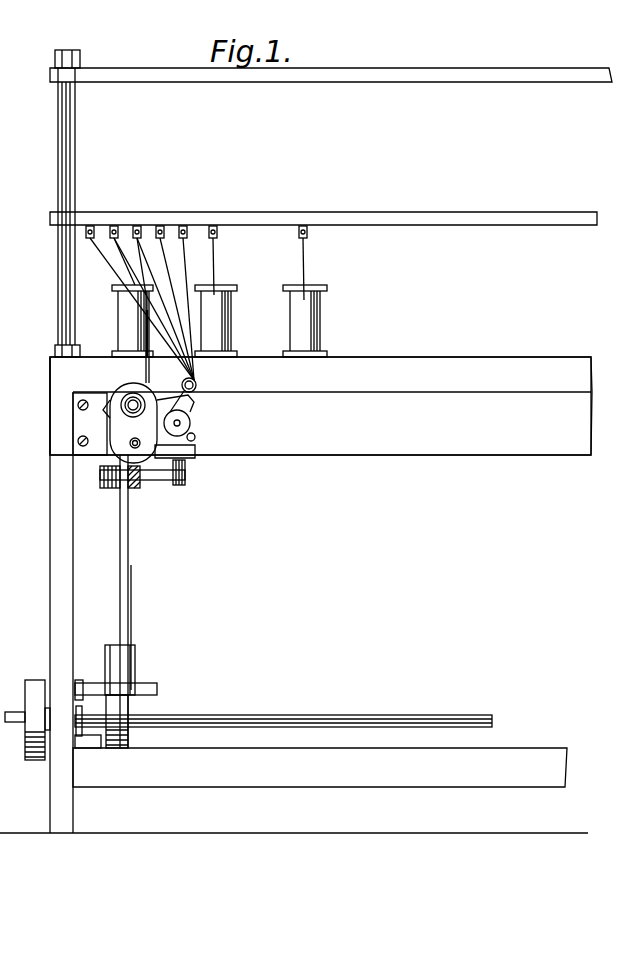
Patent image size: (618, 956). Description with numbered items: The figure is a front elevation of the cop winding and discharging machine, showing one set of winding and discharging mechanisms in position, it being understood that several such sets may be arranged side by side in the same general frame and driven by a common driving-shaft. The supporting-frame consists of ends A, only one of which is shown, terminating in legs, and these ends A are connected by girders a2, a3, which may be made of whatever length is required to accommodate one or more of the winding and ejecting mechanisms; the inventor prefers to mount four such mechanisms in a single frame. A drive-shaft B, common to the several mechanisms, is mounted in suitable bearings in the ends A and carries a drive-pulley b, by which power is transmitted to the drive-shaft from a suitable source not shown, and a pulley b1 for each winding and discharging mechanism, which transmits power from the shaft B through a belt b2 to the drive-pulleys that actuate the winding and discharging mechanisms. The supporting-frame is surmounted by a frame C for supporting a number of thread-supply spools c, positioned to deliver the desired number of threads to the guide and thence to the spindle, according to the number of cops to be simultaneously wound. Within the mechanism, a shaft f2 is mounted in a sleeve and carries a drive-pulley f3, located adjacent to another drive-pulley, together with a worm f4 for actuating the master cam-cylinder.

The end A is at (60, 505).
The frame C is at (376, 367).
The thread-supply spool c is at (302, 326).
The girder a2 is at (320, 406).
The girder a3 is at (320, 767).
The shaft f2 is at (100, 470).
The drive-pulley f3 is at (111, 488).
The worm f4 is at (180, 480).
The belt b2 is at (130, 552).
The pulley b1 is at (130, 710).
The drive-shaft B is at (225, 718).
The drive-pulley b is at (30, 680).